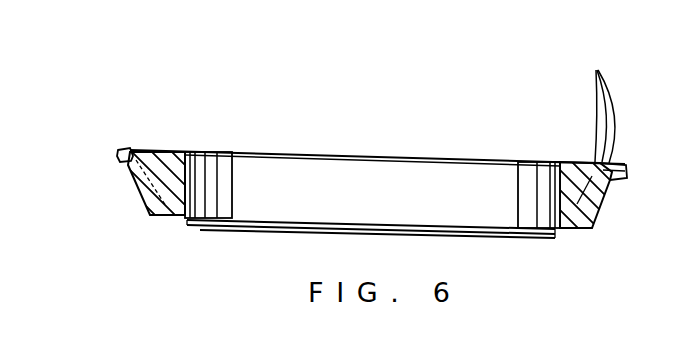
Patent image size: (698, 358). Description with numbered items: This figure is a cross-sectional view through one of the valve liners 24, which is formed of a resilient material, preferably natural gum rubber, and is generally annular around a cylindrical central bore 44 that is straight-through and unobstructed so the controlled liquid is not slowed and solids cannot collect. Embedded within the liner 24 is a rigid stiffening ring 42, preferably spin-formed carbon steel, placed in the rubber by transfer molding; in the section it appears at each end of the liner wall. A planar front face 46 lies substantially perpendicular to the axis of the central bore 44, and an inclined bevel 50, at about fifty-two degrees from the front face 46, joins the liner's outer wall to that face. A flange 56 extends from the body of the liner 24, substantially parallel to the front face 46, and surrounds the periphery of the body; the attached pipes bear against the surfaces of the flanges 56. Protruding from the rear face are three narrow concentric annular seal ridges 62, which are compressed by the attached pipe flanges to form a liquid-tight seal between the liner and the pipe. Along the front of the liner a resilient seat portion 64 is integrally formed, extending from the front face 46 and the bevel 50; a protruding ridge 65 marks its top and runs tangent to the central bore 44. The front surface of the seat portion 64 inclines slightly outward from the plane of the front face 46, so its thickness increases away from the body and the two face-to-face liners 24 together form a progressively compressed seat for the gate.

The valve liner 24 is at (312, 152).
The stiffening ring 42 is at (142, 198).
The central bore 44 is at (560, 202).
The front face 46 is at (178, 222).
The bevel 50 is at (150, 213).
The flange 56 is at (120, 162).
The seal ridges 62 is at (598, 101).
The seat portion 64 is at (455, 234).
The protruding ridge 65 is at (288, 233).